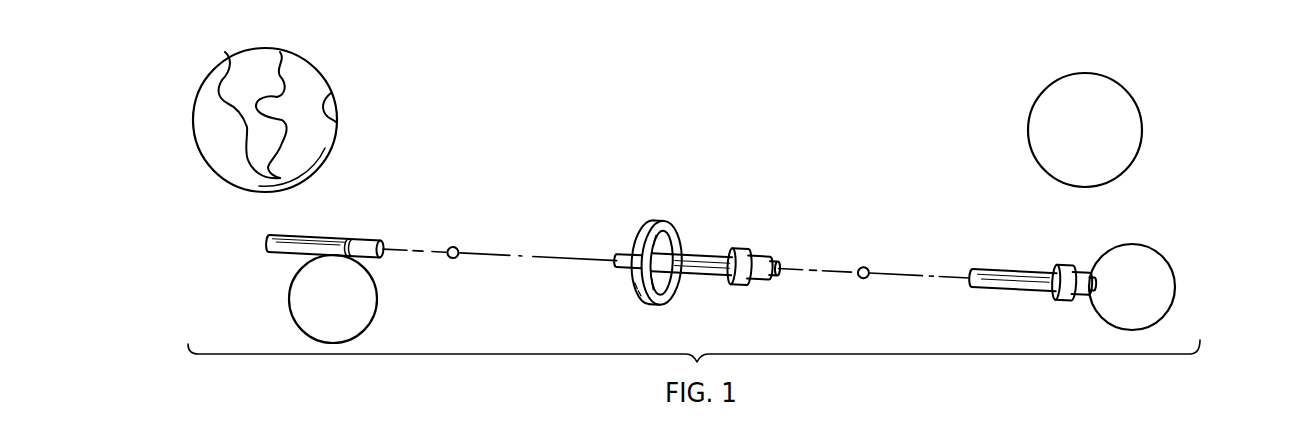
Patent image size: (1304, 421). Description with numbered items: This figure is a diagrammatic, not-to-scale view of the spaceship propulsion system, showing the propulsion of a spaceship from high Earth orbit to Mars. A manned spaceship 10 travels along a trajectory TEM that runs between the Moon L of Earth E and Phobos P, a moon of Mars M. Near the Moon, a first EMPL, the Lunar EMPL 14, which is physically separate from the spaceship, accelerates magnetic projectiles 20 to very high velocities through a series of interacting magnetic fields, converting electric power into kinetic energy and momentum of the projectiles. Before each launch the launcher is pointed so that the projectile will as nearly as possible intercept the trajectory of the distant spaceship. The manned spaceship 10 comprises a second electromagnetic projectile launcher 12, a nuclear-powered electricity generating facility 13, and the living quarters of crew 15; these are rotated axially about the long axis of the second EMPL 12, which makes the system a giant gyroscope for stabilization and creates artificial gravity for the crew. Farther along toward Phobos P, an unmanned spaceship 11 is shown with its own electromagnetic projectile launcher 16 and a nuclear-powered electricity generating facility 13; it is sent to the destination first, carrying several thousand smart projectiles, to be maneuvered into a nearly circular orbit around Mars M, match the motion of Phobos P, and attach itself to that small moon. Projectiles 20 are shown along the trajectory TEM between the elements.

The manned spaceship 10 is at (657, 264).
The unmanned spaceship 11 is at (977, 276).
The electromagnetic projectile launcher (EMPL) 12 is at (705, 255).
The nuclear-powered electricity generating facility 13 is at (753, 257).
The Lunar EMPL 14 is at (352, 243).
The living quarters of crew 15 is at (641, 299).
The electromagnetic projectile launcher (EMPL) 16 is at (1018, 272).
The projectiles 20 is at (454, 259).
The Earth E is at (198, 66).
The Mars M is at (1145, 72).
The Moon L is at (278, 314).
The Phobos P is at (1197, 267).
The trajectory TEM is at (548, 255).